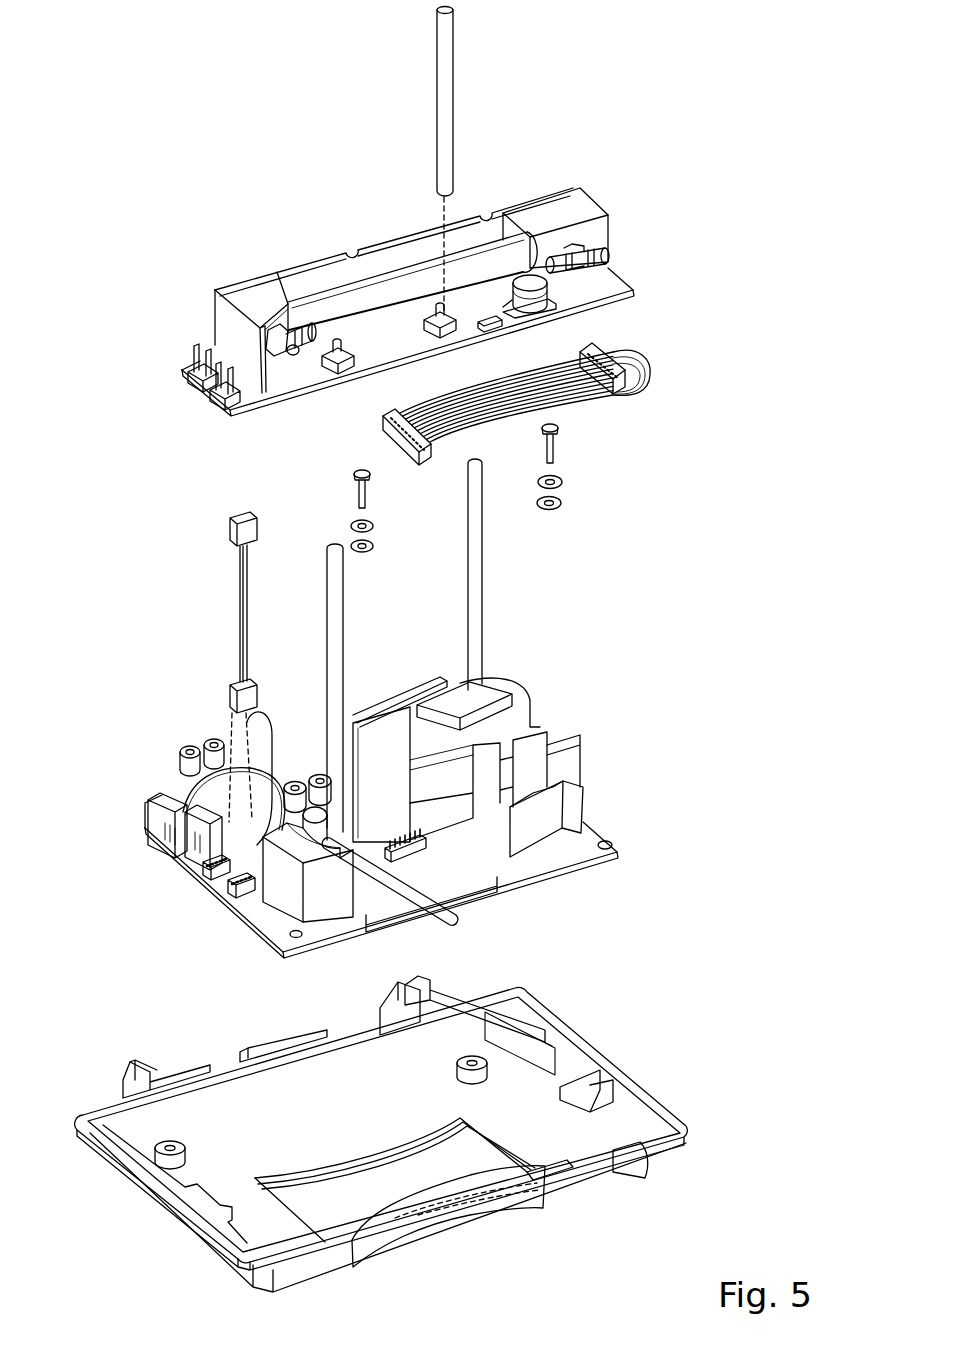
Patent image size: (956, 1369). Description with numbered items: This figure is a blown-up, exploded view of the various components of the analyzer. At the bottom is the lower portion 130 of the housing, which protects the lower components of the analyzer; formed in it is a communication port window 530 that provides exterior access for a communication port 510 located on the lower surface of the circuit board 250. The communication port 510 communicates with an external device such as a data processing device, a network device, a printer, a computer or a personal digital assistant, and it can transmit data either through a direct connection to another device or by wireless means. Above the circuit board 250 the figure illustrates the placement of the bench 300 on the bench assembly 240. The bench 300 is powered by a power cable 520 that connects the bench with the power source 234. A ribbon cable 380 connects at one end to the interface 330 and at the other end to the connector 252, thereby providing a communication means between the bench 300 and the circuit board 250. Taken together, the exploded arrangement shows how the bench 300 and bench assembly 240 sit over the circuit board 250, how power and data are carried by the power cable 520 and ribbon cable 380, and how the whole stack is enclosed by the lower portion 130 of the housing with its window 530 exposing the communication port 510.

The lower portion 130 is at (632, 1072).
The power source 234 is at (222, 892).
The bench assembly 240 is at (557, 818).
The circuit board 250 is at (614, 846).
The connector 252 is at (426, 860).
The bench 300 is at (631, 300).
The interface 330 is at (640, 302).
The ribbon cable 380 is at (650, 358).
The communication port 510 is at (408, 905).
The power cable 520 is at (241, 614).
The communication port window 530 is at (437, 1208).